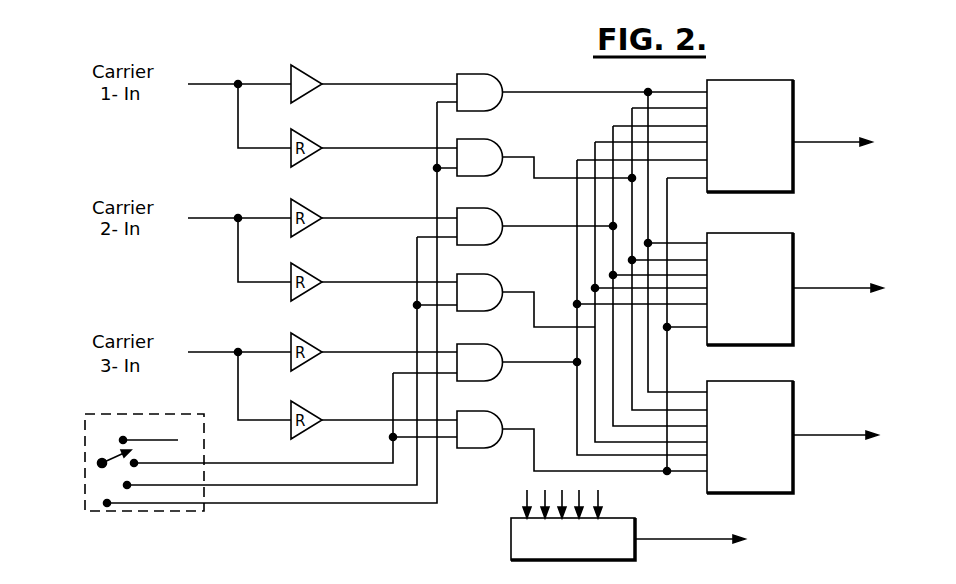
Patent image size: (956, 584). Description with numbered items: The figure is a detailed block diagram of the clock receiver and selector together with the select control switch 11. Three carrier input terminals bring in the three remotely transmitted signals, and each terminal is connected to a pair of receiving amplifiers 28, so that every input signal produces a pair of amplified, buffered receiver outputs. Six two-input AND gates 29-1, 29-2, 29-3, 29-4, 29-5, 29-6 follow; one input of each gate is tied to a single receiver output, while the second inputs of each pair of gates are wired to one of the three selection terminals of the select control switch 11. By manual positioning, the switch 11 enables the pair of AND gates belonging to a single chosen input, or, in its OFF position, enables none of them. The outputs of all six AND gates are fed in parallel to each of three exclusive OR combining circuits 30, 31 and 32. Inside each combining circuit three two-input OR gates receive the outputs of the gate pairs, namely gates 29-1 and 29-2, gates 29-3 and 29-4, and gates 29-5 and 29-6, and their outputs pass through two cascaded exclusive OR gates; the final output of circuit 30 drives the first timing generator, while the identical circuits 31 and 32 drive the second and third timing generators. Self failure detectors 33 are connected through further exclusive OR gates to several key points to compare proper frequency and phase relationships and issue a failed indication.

The select control switch 11 is at (97, 430).
The receiving amplifier 28 is at (317, 73).
The AND gate 29-1 is at (492, 83).
The AND gate 29-2 is at (492, 152).
The AND gate 29-3 is at (488, 214).
The AND gate 29-4 is at (483, 288).
The AND gate 29-5 is at (483, 366).
The AND gate 29-6 is at (483, 424).
The exclusive OR combining circuit 30 is at (778, 98).
The exclusive OR combining circuit 31 is at (797, 242).
The exclusive OR combining circuit 32 is at (797, 392).
The self failure detectors 33 is at (511, 536).